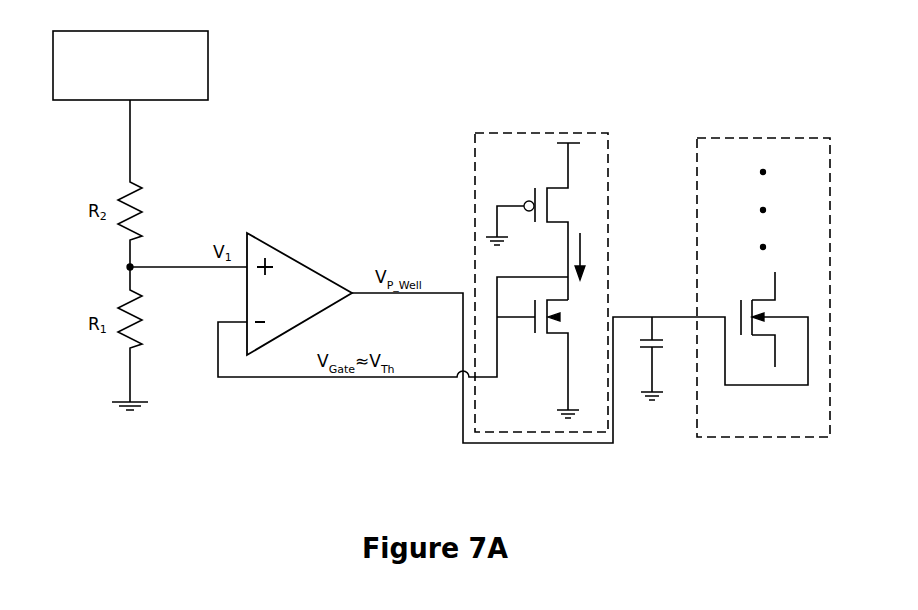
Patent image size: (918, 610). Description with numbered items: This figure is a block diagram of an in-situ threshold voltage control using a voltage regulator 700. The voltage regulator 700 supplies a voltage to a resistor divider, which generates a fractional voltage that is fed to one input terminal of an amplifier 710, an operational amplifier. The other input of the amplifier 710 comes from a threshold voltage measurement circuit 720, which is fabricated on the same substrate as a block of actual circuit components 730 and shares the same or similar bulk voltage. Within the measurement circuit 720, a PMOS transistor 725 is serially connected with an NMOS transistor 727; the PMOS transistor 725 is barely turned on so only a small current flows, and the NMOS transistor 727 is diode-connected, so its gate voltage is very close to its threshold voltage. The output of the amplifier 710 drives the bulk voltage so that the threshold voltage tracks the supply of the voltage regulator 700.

The voltage regulator 700 is at (130, 65).
The amplifier 710 is at (299, 294).
The threshold voltage measurement circuit 720 is at (530, 133).
The PMOS transistor 725 is at (533, 195).
The NMOS transistor 727 is at (533, 328).
The actual circuit components 730 is at (755, 140).